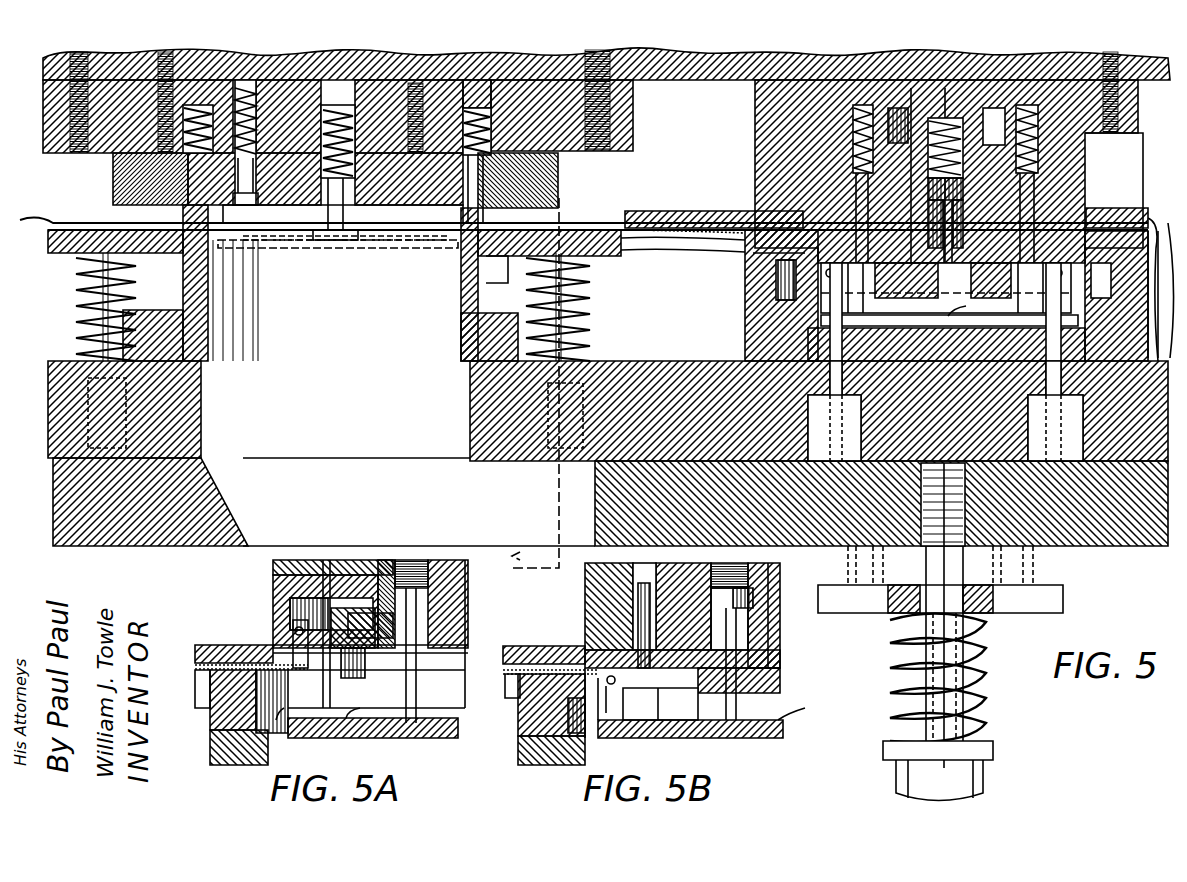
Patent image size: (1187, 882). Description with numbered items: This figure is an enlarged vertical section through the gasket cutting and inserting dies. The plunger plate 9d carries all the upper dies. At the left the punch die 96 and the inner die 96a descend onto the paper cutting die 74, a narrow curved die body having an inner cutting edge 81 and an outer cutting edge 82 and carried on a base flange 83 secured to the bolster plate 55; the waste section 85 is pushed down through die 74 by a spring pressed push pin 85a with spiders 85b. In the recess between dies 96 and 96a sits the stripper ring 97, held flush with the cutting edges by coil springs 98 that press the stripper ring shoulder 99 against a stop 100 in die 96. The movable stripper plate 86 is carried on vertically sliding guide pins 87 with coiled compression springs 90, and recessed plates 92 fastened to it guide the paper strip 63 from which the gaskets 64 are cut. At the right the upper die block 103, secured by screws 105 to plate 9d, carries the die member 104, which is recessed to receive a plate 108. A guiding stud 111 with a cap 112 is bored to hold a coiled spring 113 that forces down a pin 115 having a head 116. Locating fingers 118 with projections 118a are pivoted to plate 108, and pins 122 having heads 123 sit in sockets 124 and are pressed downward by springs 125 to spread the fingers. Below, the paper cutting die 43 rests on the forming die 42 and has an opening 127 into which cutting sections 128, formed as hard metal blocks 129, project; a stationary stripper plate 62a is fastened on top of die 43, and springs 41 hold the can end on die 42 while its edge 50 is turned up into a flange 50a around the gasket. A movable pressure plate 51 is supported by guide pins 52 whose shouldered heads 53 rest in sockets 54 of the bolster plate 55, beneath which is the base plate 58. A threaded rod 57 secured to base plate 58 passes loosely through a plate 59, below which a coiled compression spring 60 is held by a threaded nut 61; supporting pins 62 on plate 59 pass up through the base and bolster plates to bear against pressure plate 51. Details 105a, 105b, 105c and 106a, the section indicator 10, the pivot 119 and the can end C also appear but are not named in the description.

In FIG. 5, the plunger plate 9d is at (930, 48).
In FIG. 5, the screws 105 is at (747, 92).
In FIG. 5, the threaded bolt hole 105a is at (88, 58).
In FIG. 5, the bolt hole 105b is at (540, 78).
In FIG. 5, the pin 105c is at (262, 80).
In FIG. 5, the shoulder 106a is at (628, 122).
In FIG. 5, the punch die 96 is at (105, 178).
In FIG. 5, the inner die 96a is at (360, 152).
In FIG. 5, the coil springs 98 is at (190, 100).
In FIG. 5, the stripper ring shoulder 99 is at (440, 160).
In FIG. 5, the stop 100 is at (470, 158).
In FIG. 5, the stripper ring 97 is at (215, 200).
In FIG. 5, the recessed plates 92 is at (40, 210).
In FIG. 5, the waste section 85 is at (334, 268).
In FIG. 5, the push pin 85a is at (372, 212).
In FIG. 5, the spiders 85b is at (420, 220).
In FIG. 5, the inner cutting edge 81 is at (438, 240).
In FIG. 5, the stripper plate 86 is at (50, 246).
In FIG. 5, the guide pins 87 is at (68, 295).
In FIG. 5, the coiled compression springs 90 is at (128, 270).
In FIG. 5, the paper cutting die 74 is at (453, 302).
In FIG. 5, the outer cutting edge 82 is at (480, 248).
In FIG. 5, the base flange 83 is at (478, 262).
In FIG. 5, the springs 41 is at (745, 272).
In FIG. 5, the cutting sections 128 is at (770, 204).
In FIG. 5, the paper strip 63 is at (565, 215).
In FIG. 5A, the paper strip 63 is at (190, 660).
In FIG. 5B, the paper strip 63 is at (500, 661).
In FIG. 5, the section line 10 is at (555, 390).
In FIG. 5, the forming die 42 is at (752, 322).
In FIG. 5A, the forming die 42 is at (205, 745).
In FIG. 5B, the forming die 42 is at (515, 745).
In FIG. 5, the paper cutting die 43 is at (745, 258).
In FIG. 5A, the paper cutting die 43 is at (210, 683).
In FIG. 5B, the paper cutting die 43 is at (520, 698).
In FIG. 5, the die member 104 is at (768, 296).
In FIG. 5A, the die member 104 is at (265, 572).
In FIG. 5B, the die member 104 is at (772, 642).
In FIG. 5, the flange 50a is at (735, 300).
In FIG. 5, the upper die block 103 is at (1100, 130).
In FIG. 5A, the upper die block 103 is at (265, 556).
In FIG. 5B, the upper die block 103 is at (585, 610).
In FIG. 5, the springs 125 is at (855, 97).
In FIG. 5, the guiding stud 111 is at (912, 100).
In FIG. 5A, the guiding stud 111 is at (430, 600).
In FIG. 5B, the guiding stud 111 is at (770, 620).
In FIG. 5, the head 116 is at (928, 178).
In FIG. 5A, the head 116 is at (440, 580).
In FIG. 5B, the head 116 is at (745, 588).
In FIG. 5, the pin 115 is at (946, 225).
In FIG. 5A, the pin 115 is at (410, 679).
In FIG. 5B, the pin 115 is at (730, 698).
In FIG. 5, the cap 112 is at (987, 100).
In FIG. 5, the sockets 124 is at (793, 132).
In FIG. 5, the heads 123 is at (825, 160).
In FIG. 5B, the heads 123 is at (645, 568).
In FIG. 5, the pins 122 is at (800, 178).
In FIG. 5A, the pins 122 is at (282, 605).
In FIG. 5B, the pins 122 is at (626, 600).
In FIG. 5, the stationary stripper plate 62a is at (785, 182).
In FIG. 5A, the stationary stripper plate 62a is at (208, 642).
In FIG. 5B, the stationary stripper plate 62a is at (562, 644).
In FIG. 5, the opening 127 is at (1100, 218).
In FIG. 5, the plate 108 is at (897, 270).
In FIG. 5A, the plate 108 is at (440, 620).
In FIG. 5B, the plate 108 is at (772, 667).
In FIG. 5, the chip C is at (964, 304).
In FIG. 5A, the chip C is at (370, 649).
In FIG. 5B, the chip C is at (709, 715).
In FIG. 5, the pressure plate 51 is at (1100, 324).
In FIG. 5, the sockets 54 is at (1100, 356).
In FIG. 5, the guide pins 52 is at (1040, 397).
In FIG. 5, the shouldered heads 53 is at (805, 435).
In FIG. 5, the bolster plate 55 is at (193, 406).
In FIG. 5, the base plate 58 is at (218, 495).
In FIG. 5, the supporting pins 62 is at (840, 558).
In FIG. 5, the plate 59 is at (1055, 598).
In FIG. 5, the threaded rod 57 is at (935, 565).
In FIG. 5, the coiled compression spring 60 is at (985, 713).
In FIG. 5, the threaded nut 61 is at (972, 770).
In FIG. 5A, the coiled spring 113 is at (512, 552).
In FIG. 5B, the coiled spring 113 is at (720, 562).
In FIG. 5A, the pivot 119 is at (285, 622).
In FIG. 5B, the pivot 119 is at (605, 682).
In FIG. 5A, the edge 50 is at (248, 708).
In FIG. 5B, the edge 50 is at (572, 735).
In FIG. 5A, the locating fingers 118 is at (365, 665).
In FIG. 5B, the locating fingers 118 is at (625, 695).
In FIG. 5A, the projections 118a is at (325, 666).
In FIG. 5B, the blocks 129 is at (510, 676).
In FIG. 5B, the gaskets 64 is at (560, 712).